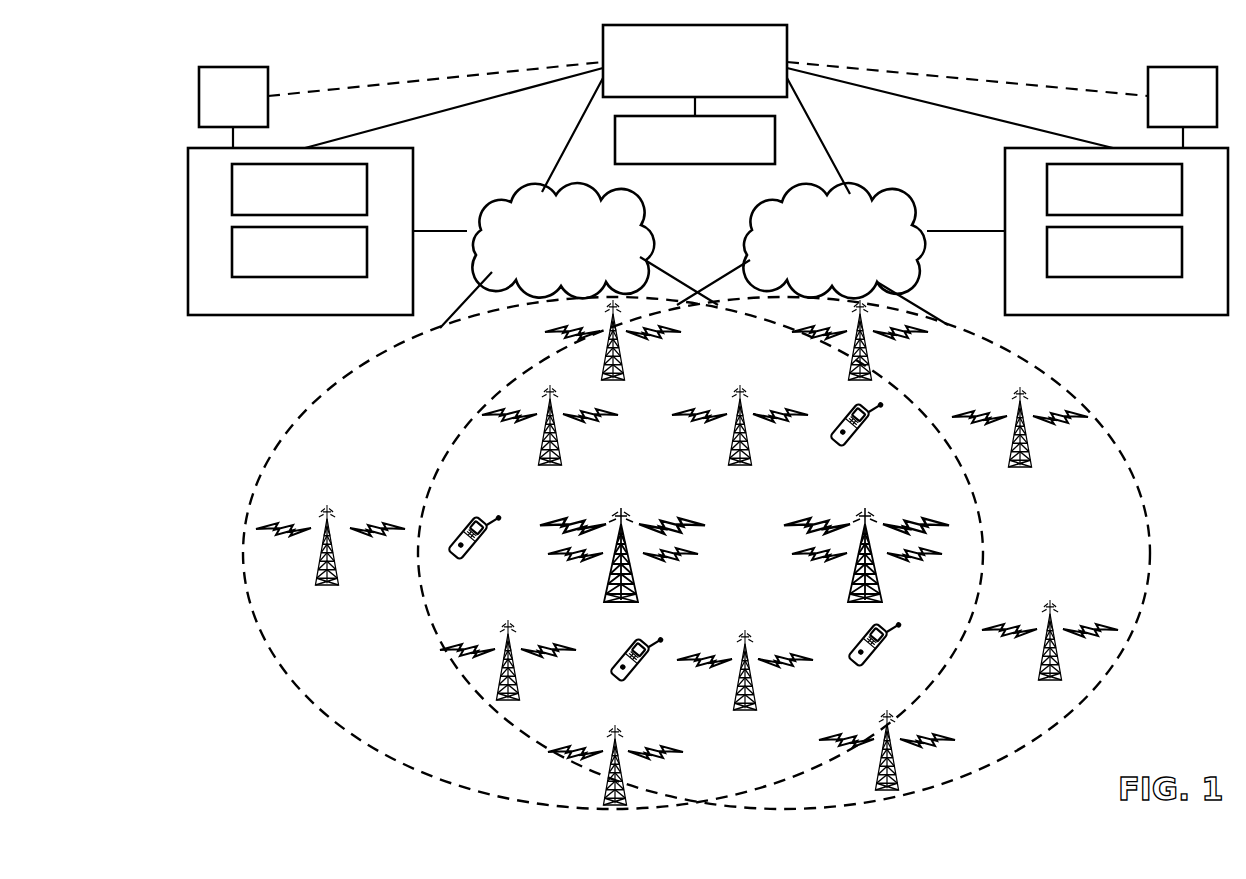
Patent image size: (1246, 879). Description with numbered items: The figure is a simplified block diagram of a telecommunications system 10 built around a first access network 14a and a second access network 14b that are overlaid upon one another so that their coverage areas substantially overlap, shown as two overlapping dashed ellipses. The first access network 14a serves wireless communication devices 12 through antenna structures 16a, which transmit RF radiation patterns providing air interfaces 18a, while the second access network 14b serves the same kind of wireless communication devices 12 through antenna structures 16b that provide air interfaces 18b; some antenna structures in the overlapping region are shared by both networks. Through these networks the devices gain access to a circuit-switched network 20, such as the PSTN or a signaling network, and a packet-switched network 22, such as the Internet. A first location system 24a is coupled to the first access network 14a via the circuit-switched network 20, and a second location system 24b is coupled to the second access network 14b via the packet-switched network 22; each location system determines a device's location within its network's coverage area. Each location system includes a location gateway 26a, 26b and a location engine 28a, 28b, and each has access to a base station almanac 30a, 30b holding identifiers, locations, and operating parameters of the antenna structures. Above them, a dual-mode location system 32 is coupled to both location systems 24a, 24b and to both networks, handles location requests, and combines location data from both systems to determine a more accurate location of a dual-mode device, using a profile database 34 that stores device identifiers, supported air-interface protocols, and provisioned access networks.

The telecommunications system 10 is at (258, 728).
The wireless communication device 12 is at (466, 552).
The first access network 14a is at (272, 455).
The second access network 14b is at (1134, 449).
The antenna structure 16a is at (622, 381).
The antenna structure 16b is at (851, 380).
The air interface 18a is at (584, 355).
The air interface 18b is at (833, 348).
The circuit-switched network 20 is at (563, 240).
The packet-switched network 22 is at (834, 240).
The first location system 24a is at (300, 231).
The second location system 24b is at (1116, 231).
The location gateway 26a is at (299, 189).
The location gateway 26b is at (1114, 189).
The location engine 28a is at (299, 252).
The location engine 28b is at (1114, 252).
The base station almanac 30a is at (233, 97).
The base station almanac 30b is at (1182, 97).
The dual-mode location system 32 is at (695, 61).
The profile database 34 is at (695, 140).